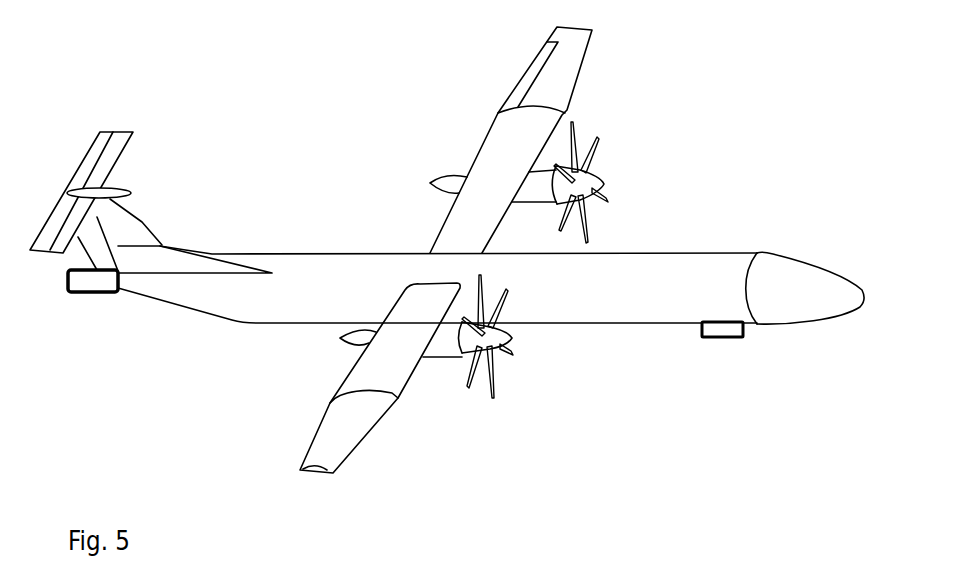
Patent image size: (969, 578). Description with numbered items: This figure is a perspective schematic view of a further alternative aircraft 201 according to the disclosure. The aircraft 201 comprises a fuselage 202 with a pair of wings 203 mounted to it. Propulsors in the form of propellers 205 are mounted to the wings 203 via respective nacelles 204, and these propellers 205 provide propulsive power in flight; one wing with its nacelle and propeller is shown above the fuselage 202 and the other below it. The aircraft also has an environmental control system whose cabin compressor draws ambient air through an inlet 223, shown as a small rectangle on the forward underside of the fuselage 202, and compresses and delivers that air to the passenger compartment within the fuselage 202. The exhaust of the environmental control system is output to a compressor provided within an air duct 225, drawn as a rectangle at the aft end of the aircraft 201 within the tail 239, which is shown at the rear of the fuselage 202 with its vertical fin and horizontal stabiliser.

The aircraft 201 is at (634, 366).
The fuselage 202 is at (652, 263).
The wings 203 is at (503, 135).
The nacelles 204 is at (460, 180).
The propellers 205 is at (587, 135).
The inlet 223 is at (735, 337).
The air duct 225 is at (92, 293).
The tail 239 is at (142, 221).